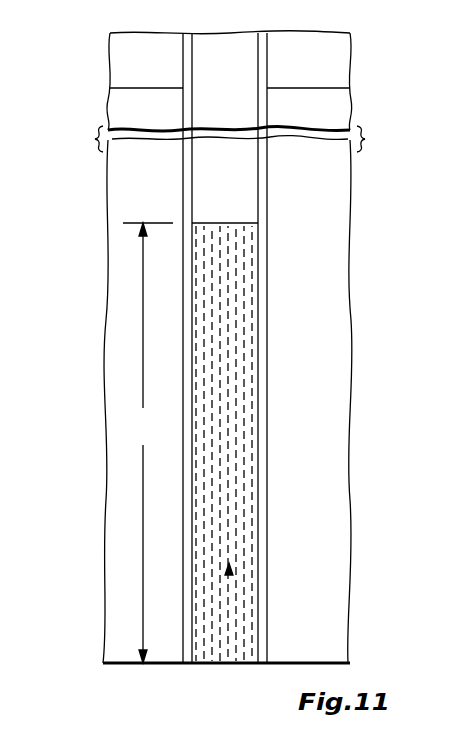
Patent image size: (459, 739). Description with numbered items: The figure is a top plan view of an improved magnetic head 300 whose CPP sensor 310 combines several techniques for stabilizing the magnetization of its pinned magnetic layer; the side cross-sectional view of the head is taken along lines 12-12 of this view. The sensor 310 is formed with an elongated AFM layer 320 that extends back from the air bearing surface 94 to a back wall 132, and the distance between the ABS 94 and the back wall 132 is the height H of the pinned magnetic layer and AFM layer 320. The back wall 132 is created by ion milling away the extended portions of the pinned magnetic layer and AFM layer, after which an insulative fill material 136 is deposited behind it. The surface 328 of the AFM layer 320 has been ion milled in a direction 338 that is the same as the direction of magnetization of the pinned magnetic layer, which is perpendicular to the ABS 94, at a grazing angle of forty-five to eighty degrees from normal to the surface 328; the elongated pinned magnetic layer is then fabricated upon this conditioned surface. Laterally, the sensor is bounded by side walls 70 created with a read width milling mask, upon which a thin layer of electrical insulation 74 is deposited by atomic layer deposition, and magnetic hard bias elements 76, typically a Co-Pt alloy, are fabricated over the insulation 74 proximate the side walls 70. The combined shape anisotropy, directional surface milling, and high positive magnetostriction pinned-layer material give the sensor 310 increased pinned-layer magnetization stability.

The section lines 12 is at (217, 30).
The magnetic head 300 is at (100, 58).
The CPP sensor 310 is at (96, 110).
The magnetic hard bias elements 76 is at (153, 185).
The insulative fill material 136 is at (243, 186).
The back wall 132 is at (201, 222).
The AFM layer 320 is at (248, 276).
The surface of the AFM layer 328 is at (250, 341).
The side walls 70 is at (191, 513).
The electrical insulation layer 74 is at (184, 554).
The ion milling direction 338 is at (229, 575).
The air bearing surface 94 is at (258, 666).
The height H is at (148, 443).